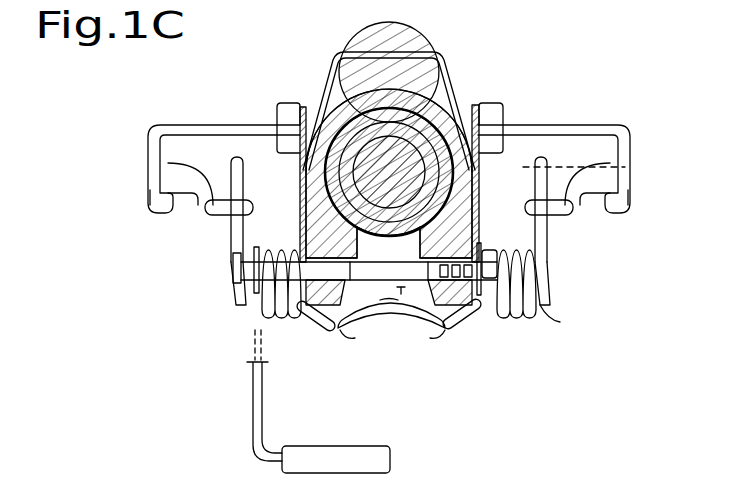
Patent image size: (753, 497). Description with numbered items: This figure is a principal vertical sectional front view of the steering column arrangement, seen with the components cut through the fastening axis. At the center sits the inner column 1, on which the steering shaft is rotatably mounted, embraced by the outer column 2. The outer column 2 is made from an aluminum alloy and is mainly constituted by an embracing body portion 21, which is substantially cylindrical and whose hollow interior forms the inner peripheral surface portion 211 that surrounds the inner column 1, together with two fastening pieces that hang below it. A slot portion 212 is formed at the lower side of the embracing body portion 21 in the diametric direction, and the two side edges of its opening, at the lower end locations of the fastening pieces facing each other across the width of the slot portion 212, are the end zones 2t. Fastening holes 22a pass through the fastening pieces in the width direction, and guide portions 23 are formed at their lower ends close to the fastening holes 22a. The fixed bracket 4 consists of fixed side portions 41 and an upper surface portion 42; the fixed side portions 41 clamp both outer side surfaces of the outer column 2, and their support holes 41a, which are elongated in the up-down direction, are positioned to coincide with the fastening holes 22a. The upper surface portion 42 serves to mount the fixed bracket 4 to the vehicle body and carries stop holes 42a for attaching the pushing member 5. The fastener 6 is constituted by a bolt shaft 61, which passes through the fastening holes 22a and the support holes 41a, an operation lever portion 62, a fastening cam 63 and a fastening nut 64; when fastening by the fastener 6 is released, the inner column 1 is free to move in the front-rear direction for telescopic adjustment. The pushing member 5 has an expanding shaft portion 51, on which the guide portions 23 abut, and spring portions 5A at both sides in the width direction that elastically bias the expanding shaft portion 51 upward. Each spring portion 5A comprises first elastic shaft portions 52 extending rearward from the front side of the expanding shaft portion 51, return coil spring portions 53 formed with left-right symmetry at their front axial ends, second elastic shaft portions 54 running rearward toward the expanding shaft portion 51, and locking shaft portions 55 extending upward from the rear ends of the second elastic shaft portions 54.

The inner column 1 is at (378, 112).
The outer column 2 is at (424, 88).
The embracing body portion 21 is at (362, 100).
The inner peripheral surface portion 211 is at (437, 128).
The slot portion 212 is at (405, 300).
The fastening holes 22a is at (310, 310).
The guide portions 23 is at (345, 262).
The end zones 2t is at (357, 315).
The fixed bracket 4 is at (585, 120).
The fixed side portions 41 is at (300, 153).
The support holes 41a is at (268, 308).
The upper surface portion 42 is at (208, 124).
The stop holes 42a is at (213, 205).
The pushing member 5 is at (228, 233).
The spring portions 5A is at (227, 247).
The expanding shaft portion 51 is at (362, 312).
The first elastic shaft portions 52 is at (470, 312).
The return coil spring portions 53 is at (543, 313).
The second elastic shaft portions 54 is at (542, 231).
The locking shaft portions 55 is at (625, 165).
The fastener 6 is at (227, 274).
The bolt shaft 61 is at (384, 318).
The operation lever portion 62 is at (252, 392).
The fastening cam 63 is at (293, 303).
The fastening nut 64 is at (243, 305).